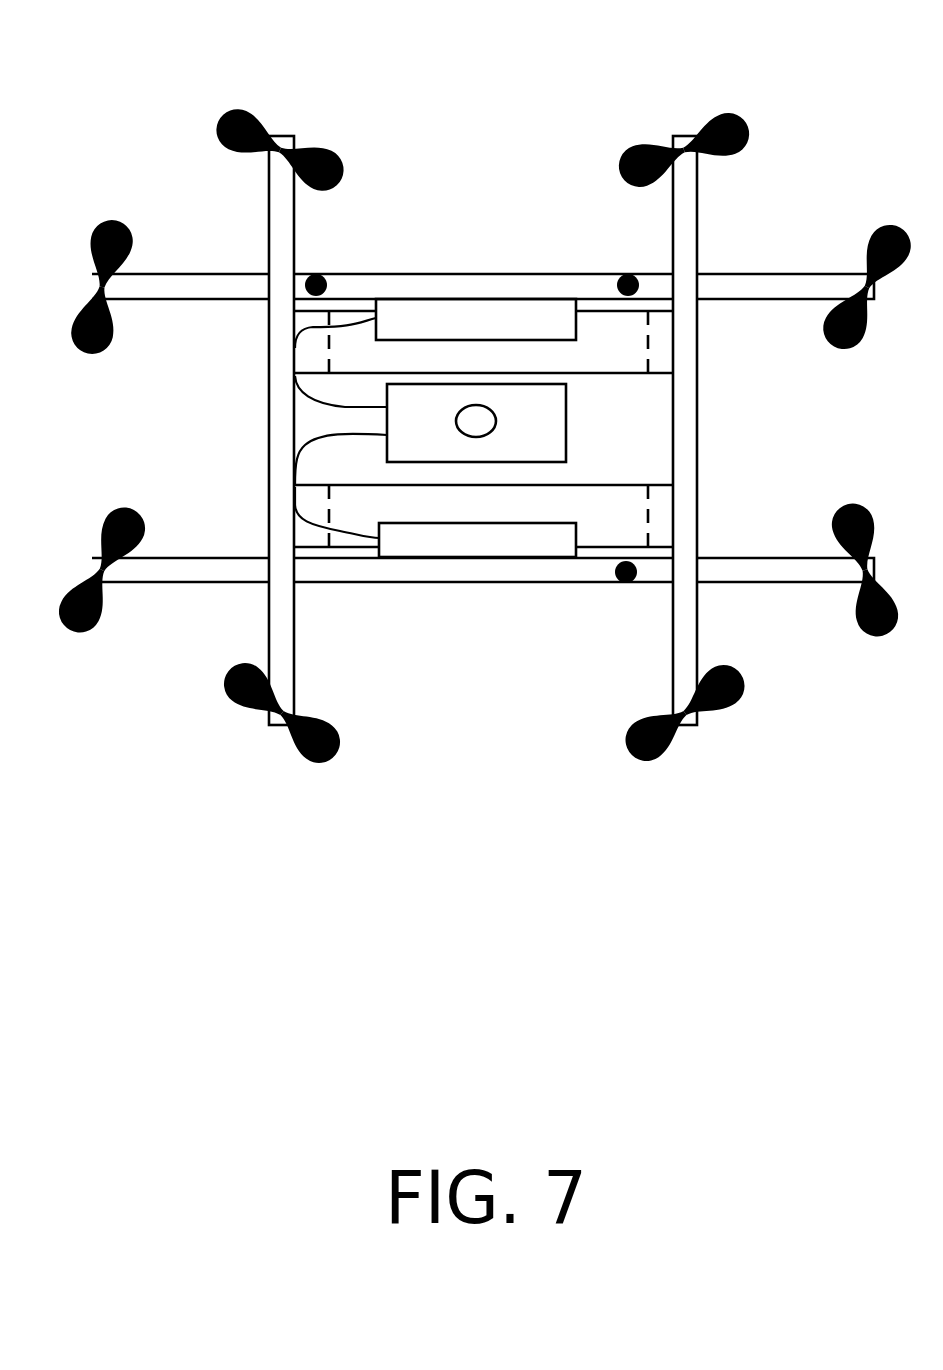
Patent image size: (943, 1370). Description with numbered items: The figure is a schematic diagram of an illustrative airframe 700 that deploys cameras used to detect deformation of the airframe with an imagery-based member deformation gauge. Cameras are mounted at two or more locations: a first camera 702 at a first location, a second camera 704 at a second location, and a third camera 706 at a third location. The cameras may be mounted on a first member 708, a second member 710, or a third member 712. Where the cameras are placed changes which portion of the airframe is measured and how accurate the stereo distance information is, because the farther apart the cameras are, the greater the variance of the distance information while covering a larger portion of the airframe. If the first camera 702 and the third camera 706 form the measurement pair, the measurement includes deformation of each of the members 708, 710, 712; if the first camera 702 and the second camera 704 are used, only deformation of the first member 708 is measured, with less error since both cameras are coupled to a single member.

The airframe 700 is at (773, 51).
The first camera 702 is at (322, 276).
The second camera 704 is at (620, 277).
The third camera 706 is at (618, 583).
The first member 708 is at (565, 275).
The second member 710 is at (697, 430).
The third member 712 is at (332, 582).